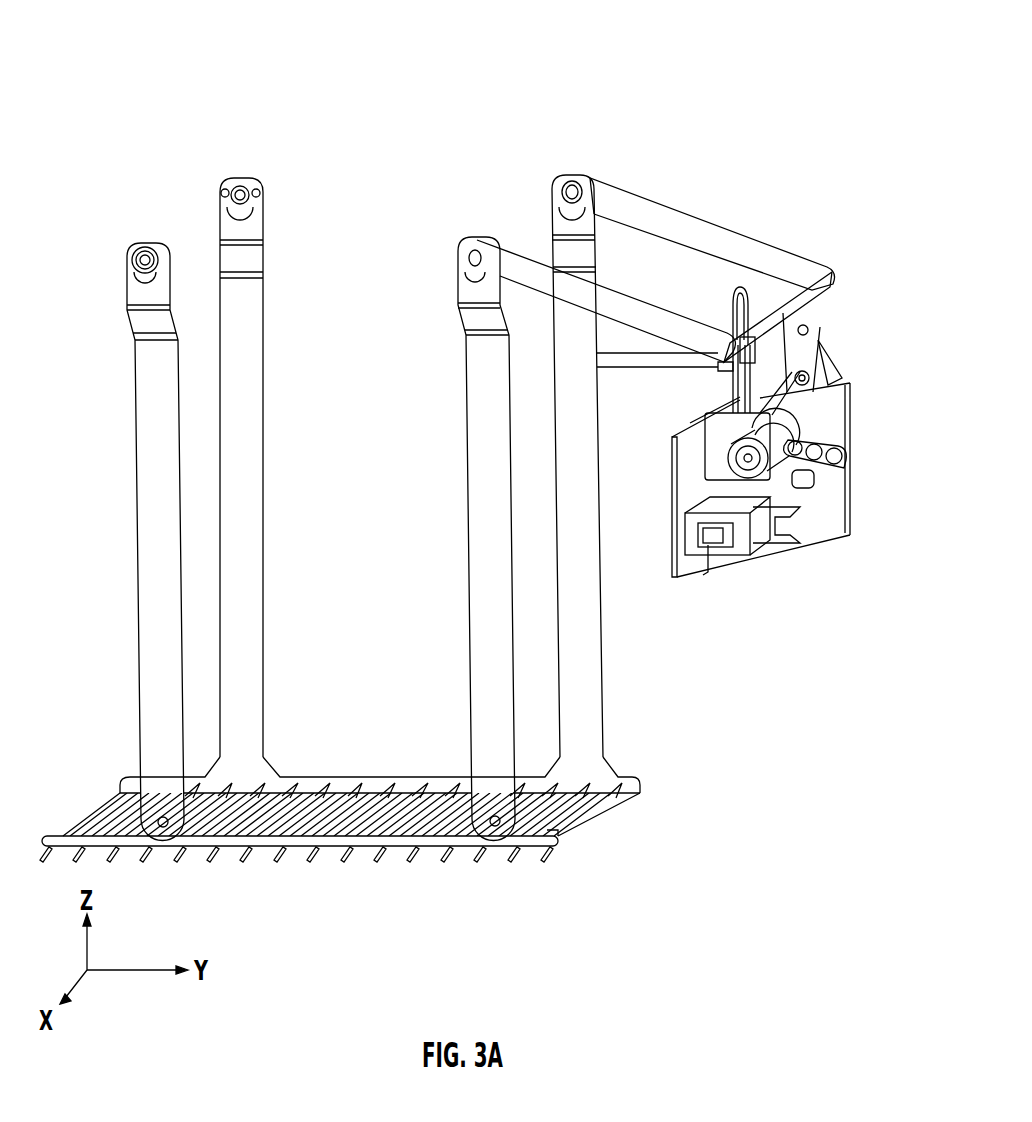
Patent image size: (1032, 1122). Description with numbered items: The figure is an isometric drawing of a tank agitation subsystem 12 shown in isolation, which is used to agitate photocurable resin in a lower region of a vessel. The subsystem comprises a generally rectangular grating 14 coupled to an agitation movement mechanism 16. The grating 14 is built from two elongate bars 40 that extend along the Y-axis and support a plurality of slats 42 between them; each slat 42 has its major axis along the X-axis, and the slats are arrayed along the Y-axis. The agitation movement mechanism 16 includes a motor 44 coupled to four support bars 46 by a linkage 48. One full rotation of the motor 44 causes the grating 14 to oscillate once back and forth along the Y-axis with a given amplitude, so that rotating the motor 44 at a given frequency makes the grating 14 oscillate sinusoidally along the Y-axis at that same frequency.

The tank agitation subsystem 12 is at (664, 103).
The grating 14 is at (622, 823).
The agitation movement mechanism 16 is at (856, 257).
The elongate bars 40 is at (382, 781).
The slats 42 is at (80, 818).
The motor 44 is at (782, 432).
The support bars 46 is at (158, 505).
The linkage 48 is at (820, 350).